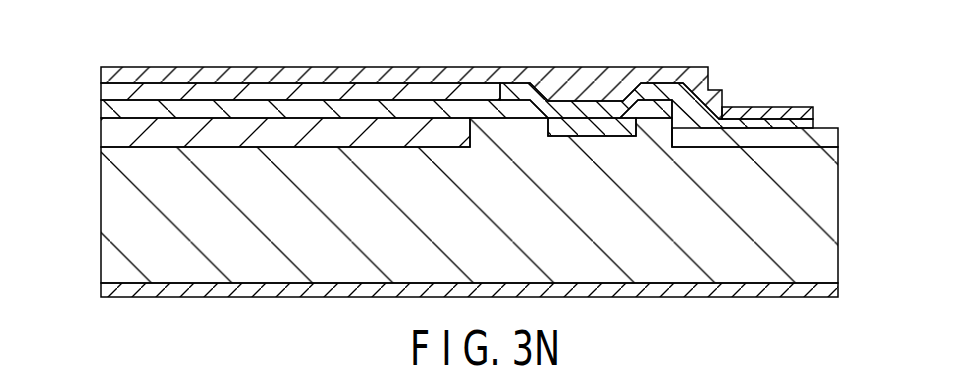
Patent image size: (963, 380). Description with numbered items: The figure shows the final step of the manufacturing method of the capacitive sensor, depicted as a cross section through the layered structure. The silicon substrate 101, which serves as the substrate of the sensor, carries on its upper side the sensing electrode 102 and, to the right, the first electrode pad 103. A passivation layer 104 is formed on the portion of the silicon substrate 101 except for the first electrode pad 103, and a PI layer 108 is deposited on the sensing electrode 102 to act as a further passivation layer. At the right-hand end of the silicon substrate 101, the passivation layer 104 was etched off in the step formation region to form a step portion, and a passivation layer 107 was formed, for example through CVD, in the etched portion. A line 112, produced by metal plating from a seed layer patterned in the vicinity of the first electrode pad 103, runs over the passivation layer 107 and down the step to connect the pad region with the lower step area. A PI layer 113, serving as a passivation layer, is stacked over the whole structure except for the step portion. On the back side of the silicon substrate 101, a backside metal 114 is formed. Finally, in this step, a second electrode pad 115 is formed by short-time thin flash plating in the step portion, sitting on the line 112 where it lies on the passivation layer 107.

The silicon substrate 101 is at (123, 213).
The sensing electrode 102 is at (114, 134).
The first electrode pad 103 is at (602, 128).
The passivation layer 104 is at (114, 112).
The passivation layer 107 is at (828, 141).
The PI layer 108 is at (115, 91).
The line 112 is at (662, 80).
The PI layer 113 is at (116, 74).
The backside metal 114 is at (103, 288).
The second electrode pad 115 is at (761, 106).